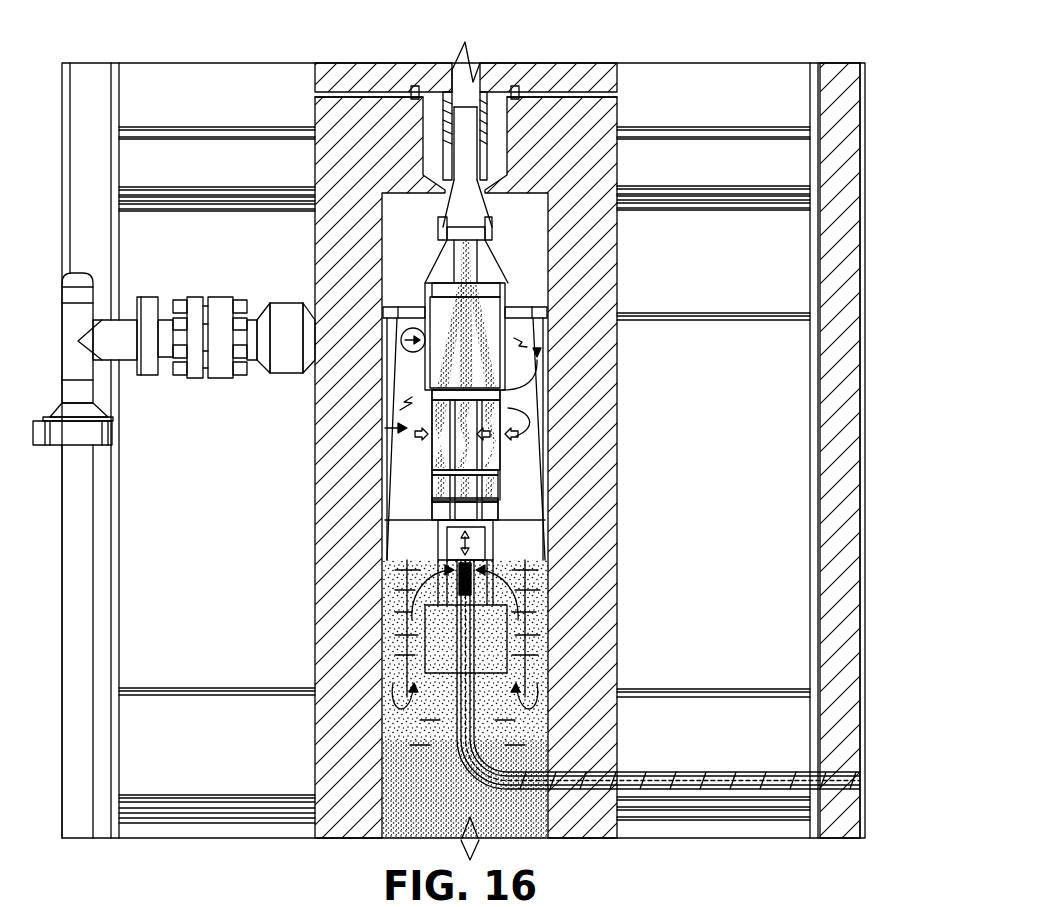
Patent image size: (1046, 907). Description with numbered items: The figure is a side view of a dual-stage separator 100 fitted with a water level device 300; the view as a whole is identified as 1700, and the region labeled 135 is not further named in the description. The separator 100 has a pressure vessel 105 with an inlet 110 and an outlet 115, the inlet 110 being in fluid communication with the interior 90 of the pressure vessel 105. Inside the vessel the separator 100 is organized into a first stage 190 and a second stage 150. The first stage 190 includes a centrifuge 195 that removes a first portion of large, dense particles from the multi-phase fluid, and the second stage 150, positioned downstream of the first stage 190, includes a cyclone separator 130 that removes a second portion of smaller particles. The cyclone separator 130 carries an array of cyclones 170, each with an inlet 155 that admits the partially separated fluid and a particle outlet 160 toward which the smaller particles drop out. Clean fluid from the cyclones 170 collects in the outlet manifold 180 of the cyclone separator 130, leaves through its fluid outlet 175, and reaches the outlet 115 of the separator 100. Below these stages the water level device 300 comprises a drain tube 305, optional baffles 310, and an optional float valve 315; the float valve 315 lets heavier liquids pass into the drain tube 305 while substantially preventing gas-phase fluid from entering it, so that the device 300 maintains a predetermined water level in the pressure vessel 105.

The system 1700 is at (452, 485).
The dual-stage separator 100 is at (297, 257).
The pressure vessel 105 is at (330, 622).
The inlet 110 is at (385, 428).
The outlet 115 is at (487, 107).
The fluid outlet 175 is at (482, 200).
The outlet manifold 180 is at (505, 298).
The cyclone separator 130 is at (530, 327).
The interior 90 is at (545, 347).
The first stage 190 is at (538, 355).
The centrifuge 195 is at (508, 410).
The cyclones 170 is at (530, 428).
The float valve 315 is at (528, 500).
The inlet 155 is at (435, 478).
The particle outlet 160 is at (480, 547).
The baffles 310 is at (487, 588).
The particulate bed 135 is at (407, 755).
The drain tube 305 is at (703, 770).
The second stage 150 is at (423, 452).
The water level device 300 is at (654, 638).